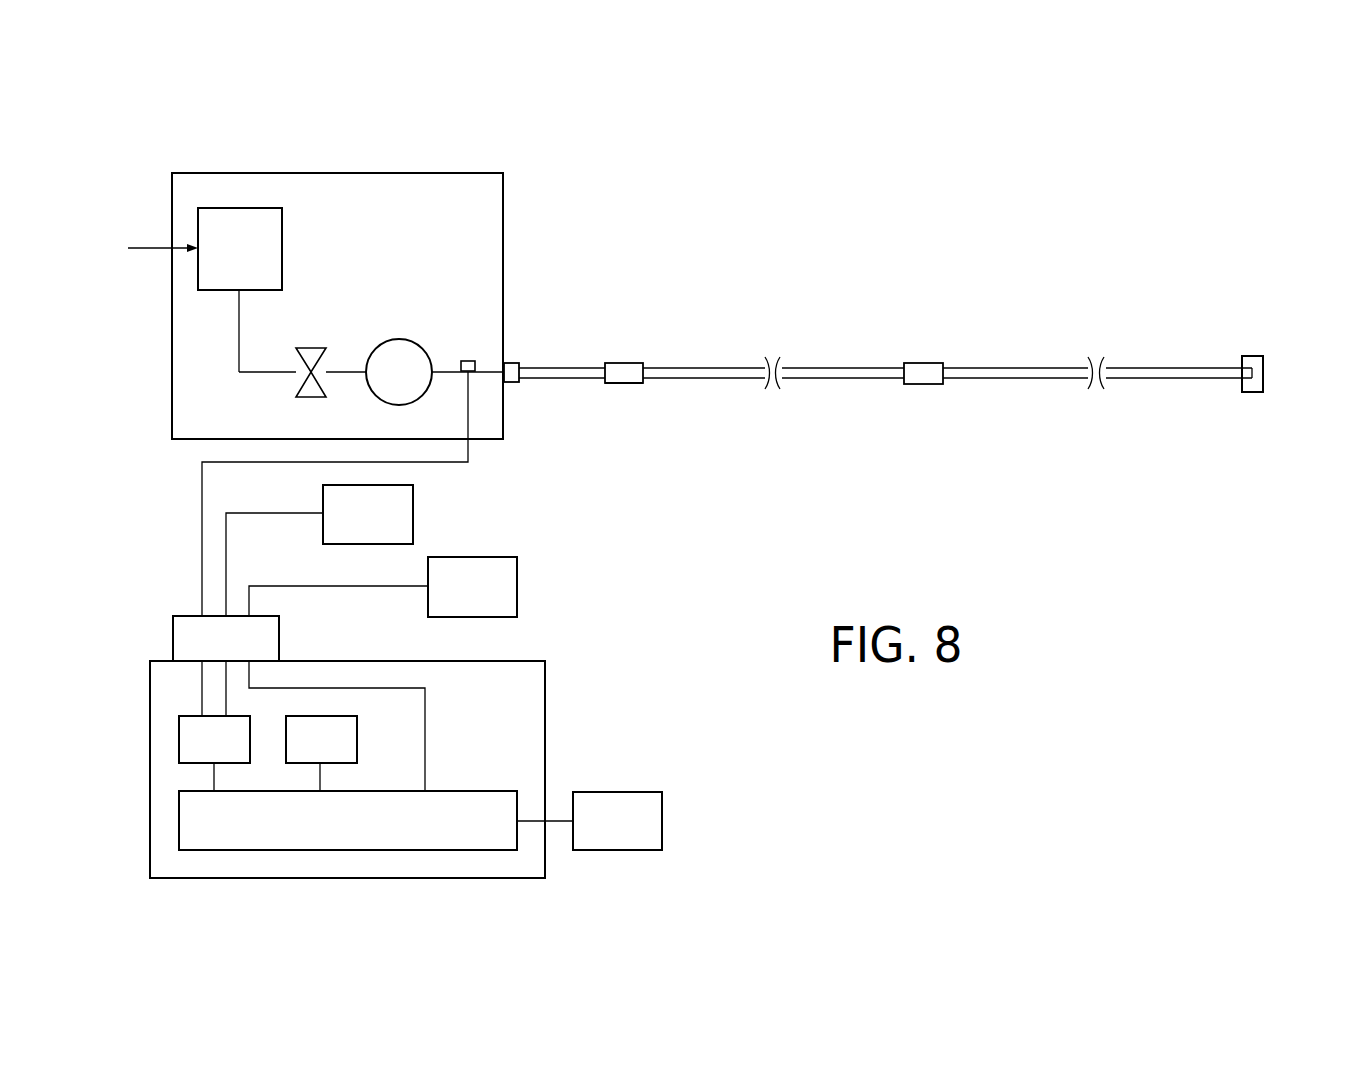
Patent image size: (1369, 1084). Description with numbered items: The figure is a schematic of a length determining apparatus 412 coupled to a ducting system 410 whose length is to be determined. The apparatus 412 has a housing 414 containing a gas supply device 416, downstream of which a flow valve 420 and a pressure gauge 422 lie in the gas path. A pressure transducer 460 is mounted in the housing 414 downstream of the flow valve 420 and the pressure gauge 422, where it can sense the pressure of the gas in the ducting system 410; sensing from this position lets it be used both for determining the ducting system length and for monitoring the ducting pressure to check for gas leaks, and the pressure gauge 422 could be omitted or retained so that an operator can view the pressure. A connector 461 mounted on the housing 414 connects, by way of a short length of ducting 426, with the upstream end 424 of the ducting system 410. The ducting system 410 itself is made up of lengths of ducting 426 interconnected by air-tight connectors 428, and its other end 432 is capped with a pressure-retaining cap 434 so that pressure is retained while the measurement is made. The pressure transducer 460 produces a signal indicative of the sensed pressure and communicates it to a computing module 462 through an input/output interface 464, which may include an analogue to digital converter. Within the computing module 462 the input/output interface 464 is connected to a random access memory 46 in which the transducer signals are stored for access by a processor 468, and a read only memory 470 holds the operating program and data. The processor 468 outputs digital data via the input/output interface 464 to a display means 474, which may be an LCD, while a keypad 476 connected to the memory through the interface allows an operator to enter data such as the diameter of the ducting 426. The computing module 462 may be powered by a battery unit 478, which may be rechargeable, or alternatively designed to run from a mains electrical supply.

The ducting system 410 is at (969, 321).
The length determining apparatus 412 is at (463, 142).
The housing 414 is at (503, 189).
The gas supply device 416 is at (282, 223).
The flow valve 420 is at (313, 347).
The pressure gauge 422 is at (402, 338).
The upstream end 424 is at (630, 402).
The ducting 426 is at (565, 382).
The air-tight connector 428 is at (628, 363).
The other end 432 is at (1234, 416).
The pressure-retaining cap 434 is at (1263, 368).
The pressure transducer 460 is at (467, 360).
The connector 461 is at (510, 362).
The computing module 462 is at (127, 678).
The input/output interface 464 is at (206, 652).
The memory 46 is at (228, 754).
The processor 468 is at (327, 834).
The read only memory 470 is at (300, 754).
The display means 474 is at (452, 601).
The keypad 476 is at (348, 528).
The battery unit 478 is at (597, 835).